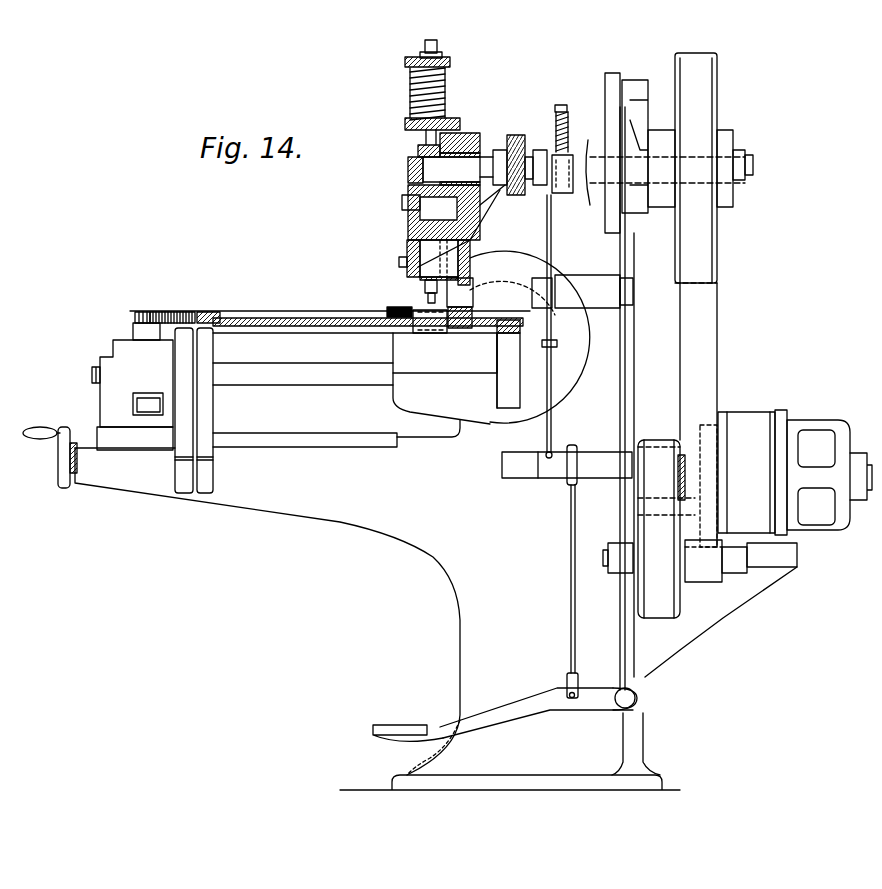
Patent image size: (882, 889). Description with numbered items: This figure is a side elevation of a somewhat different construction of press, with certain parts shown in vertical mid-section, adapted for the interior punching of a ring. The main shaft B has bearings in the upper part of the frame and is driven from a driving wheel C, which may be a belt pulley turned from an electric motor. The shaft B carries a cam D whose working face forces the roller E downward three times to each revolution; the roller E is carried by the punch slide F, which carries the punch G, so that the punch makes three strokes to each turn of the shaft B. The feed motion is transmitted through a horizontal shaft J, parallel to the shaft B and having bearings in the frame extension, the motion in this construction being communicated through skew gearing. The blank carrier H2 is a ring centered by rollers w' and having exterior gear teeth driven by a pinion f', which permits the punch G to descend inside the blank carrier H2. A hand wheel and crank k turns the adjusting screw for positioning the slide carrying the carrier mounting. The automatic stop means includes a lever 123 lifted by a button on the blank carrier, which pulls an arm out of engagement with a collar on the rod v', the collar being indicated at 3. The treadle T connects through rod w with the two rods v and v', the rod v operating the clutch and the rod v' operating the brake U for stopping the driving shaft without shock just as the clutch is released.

The cam D is at (418, 151).
The roller E is at (410, 222).
The punch slide F is at (407, 252).
The punch G is at (425, 290).
The lever 123 is at (462, 293).
The main shaft B is at (534, 143).
The brake U is at (562, 105).
The driving wheel C is at (718, 102).
The pinion f' is at (127, 304).
The blank carrier H2 is at (187, 302).
The rollers w' is at (334, 306).
The shaft J is at (332, 365).
The collar 3 is at (557, 344).
The rod v is at (635, 398).
The rod v' is at (567, 336).
The hand wheel and crank k is at (50, 457).
The rod w is at (562, 571).
The treadle T is at (505, 714).